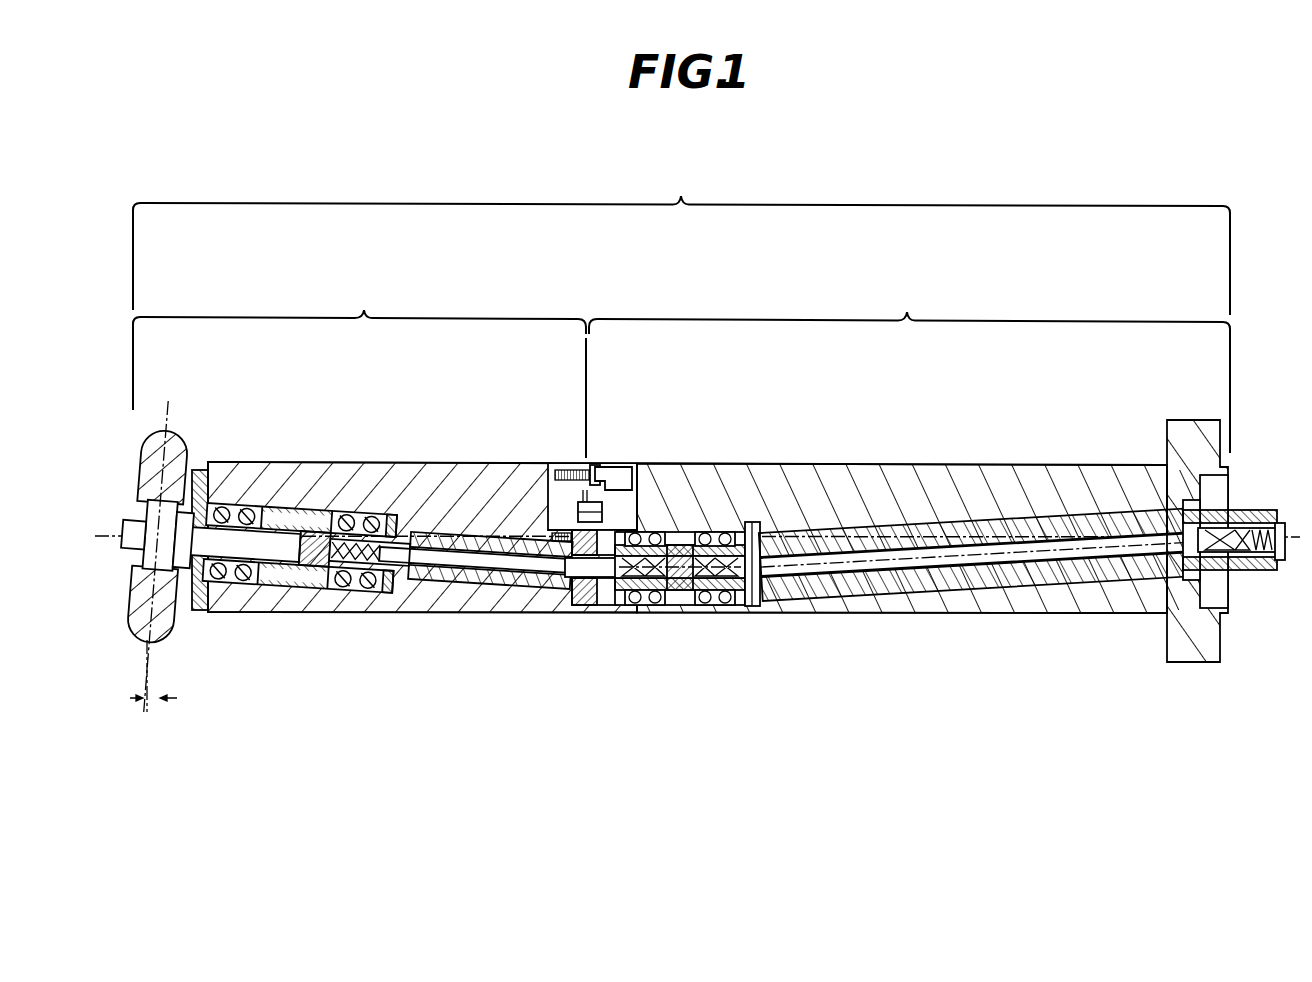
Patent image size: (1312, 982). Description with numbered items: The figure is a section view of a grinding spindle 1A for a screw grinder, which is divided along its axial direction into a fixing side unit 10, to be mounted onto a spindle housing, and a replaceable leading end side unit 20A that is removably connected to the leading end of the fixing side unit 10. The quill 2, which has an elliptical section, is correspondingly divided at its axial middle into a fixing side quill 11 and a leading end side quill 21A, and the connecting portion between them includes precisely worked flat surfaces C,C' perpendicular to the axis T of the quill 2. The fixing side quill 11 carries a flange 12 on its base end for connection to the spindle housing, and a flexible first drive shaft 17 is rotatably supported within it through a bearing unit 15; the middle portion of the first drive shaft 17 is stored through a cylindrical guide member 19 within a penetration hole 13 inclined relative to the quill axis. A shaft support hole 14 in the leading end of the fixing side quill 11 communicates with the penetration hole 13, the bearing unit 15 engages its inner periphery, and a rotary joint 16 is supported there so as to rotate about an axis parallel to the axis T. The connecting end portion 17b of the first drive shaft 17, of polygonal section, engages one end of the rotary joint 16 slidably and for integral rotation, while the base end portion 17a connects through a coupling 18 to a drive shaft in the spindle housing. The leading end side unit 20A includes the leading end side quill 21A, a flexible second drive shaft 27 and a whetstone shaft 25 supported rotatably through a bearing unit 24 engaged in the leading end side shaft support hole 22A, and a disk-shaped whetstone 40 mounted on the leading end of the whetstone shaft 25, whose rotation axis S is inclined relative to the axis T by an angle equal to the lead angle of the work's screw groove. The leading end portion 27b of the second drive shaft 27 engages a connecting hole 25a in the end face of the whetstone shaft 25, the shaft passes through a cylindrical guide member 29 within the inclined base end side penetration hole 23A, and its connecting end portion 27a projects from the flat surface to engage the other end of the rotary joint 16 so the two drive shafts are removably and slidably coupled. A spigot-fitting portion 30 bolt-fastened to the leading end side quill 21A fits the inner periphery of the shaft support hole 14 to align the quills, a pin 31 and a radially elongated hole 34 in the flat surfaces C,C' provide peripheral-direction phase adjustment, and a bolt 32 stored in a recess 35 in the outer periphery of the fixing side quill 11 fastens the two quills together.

The grinding spindle 1A is at (681, 243).
The leading end side unit 20A is at (359, 372).
The fixing side unit 10 is at (909, 369).
The whetstone 40 is at (154, 428).
The whetstone shaft 25 is at (272, 536).
The leading end portion 27b is at (322, 546).
The elongated hole 34 is at (578, 512).
The flat surfaces C,C' is at (558, 442).
The bolt 32 is at (593, 467).
The pin 31 is at (613, 468).
The recess 35 is at (603, 505).
The rotary joint 16 is at (682, 530).
The quill 2 is at (778, 463).
The axis T is at (866, 530).
The fixing side quill 11 is at (945, 464).
The flange 12 is at (1196, 420).
The coupling 18 is at (1245, 518).
The base end portion 17a is at (1245, 562).
The rotation axis S is at (105, 538).
The bearing unit 24 is at (246, 588).
The leading end side shaft support hole 22A is at (305, 582).
The connecting hole 25a is at (342, 586).
The leading end side quill 21A is at (402, 612).
The second drive shaft 27 is at (454, 562).
The base end side penetration hole 23A is at (508, 590).
The cylindrical guide member 29 is at (542, 584).
The spigot-fitting portion 30 is at (590, 606).
The connecting end portion 27a is at (648, 605).
The shaft support hole 14 is at (626, 606).
The bearing unit 15 is at (682, 606).
The connecting end portion 17b is at (748, 607).
The penetration hole 13 is at (897, 584).
The first drive shaft 17 is at (971, 562).
The cylindrical guide member 19 is at (1022, 592).